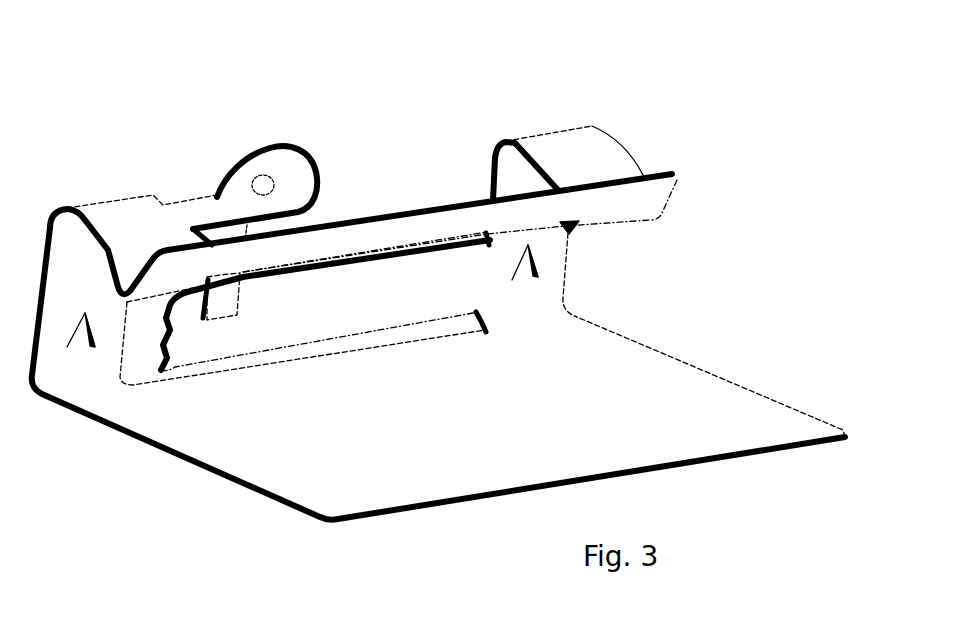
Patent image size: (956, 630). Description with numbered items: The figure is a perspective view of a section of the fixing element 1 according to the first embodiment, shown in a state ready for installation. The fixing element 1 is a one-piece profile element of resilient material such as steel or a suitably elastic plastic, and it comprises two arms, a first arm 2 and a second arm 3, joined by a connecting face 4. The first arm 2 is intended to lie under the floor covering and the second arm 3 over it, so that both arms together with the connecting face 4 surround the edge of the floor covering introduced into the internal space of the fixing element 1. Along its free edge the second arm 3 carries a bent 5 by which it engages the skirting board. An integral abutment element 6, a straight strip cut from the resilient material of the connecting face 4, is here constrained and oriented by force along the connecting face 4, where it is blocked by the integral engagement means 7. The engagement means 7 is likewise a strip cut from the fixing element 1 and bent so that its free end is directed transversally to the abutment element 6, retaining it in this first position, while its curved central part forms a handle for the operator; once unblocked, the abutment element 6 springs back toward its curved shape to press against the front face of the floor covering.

The fixing element 1 is at (702, 248).
The first arm 2 is at (657, 408).
The second arm 3 is at (585, 143).
The connecting face 4 is at (520, 297).
The bent 5 is at (130, 273).
The abutment element 6 is at (383, 292).
The engagement means 7 is at (282, 166).